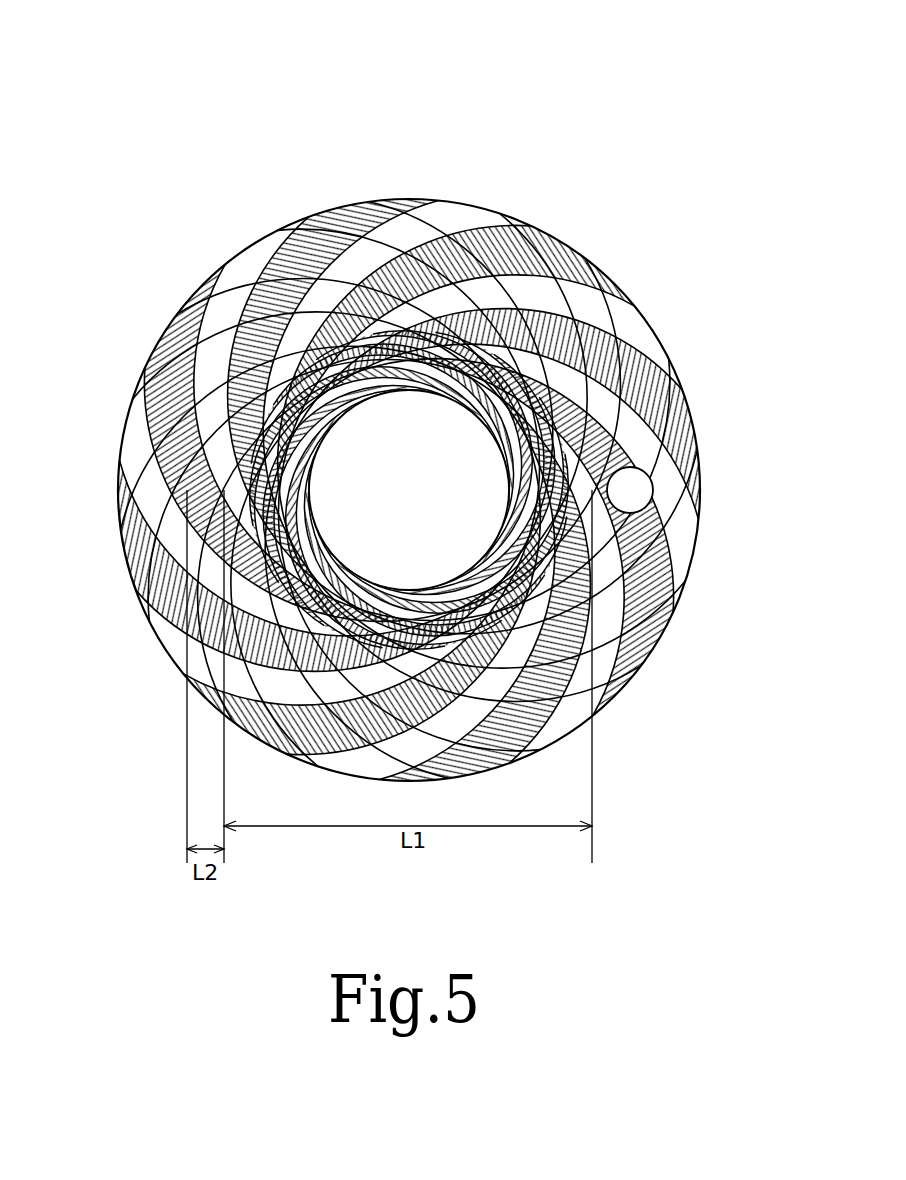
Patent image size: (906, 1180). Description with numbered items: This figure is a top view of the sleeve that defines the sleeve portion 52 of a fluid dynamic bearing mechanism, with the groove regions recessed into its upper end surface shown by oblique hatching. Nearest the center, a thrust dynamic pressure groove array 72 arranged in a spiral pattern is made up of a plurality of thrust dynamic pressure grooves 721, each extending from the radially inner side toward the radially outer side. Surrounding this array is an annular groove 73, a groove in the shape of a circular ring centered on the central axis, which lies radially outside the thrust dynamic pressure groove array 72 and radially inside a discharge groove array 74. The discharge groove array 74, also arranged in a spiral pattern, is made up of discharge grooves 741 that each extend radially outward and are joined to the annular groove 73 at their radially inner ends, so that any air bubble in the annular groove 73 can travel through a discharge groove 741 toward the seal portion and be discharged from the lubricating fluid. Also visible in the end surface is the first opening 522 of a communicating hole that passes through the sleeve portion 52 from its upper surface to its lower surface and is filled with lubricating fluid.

The sleeve portion 52 is at (188, 130).
The thrust dynamic pressure groove array 72 is at (237, 442).
The thrust dynamic pressure groove 721 is at (250, 377).
The annular groove 73 is at (312, 262).
The discharge groove array 74 is at (538, 250).
The discharge groove 741 is at (622, 290).
The first opening 522 is at (632, 490).